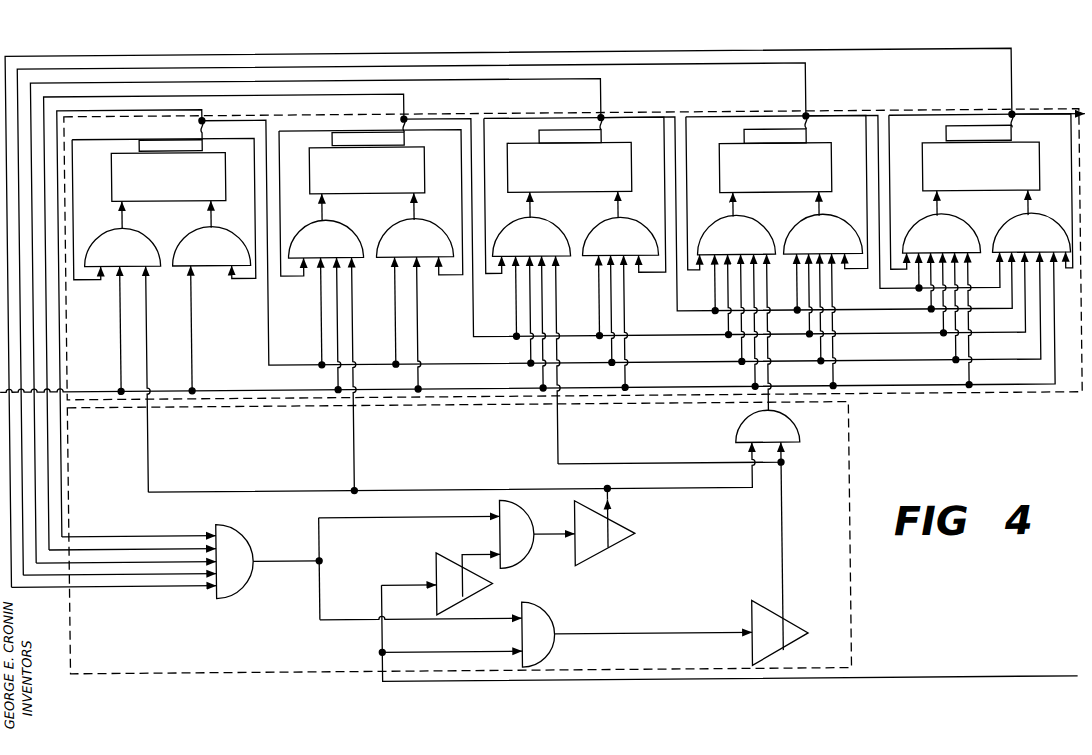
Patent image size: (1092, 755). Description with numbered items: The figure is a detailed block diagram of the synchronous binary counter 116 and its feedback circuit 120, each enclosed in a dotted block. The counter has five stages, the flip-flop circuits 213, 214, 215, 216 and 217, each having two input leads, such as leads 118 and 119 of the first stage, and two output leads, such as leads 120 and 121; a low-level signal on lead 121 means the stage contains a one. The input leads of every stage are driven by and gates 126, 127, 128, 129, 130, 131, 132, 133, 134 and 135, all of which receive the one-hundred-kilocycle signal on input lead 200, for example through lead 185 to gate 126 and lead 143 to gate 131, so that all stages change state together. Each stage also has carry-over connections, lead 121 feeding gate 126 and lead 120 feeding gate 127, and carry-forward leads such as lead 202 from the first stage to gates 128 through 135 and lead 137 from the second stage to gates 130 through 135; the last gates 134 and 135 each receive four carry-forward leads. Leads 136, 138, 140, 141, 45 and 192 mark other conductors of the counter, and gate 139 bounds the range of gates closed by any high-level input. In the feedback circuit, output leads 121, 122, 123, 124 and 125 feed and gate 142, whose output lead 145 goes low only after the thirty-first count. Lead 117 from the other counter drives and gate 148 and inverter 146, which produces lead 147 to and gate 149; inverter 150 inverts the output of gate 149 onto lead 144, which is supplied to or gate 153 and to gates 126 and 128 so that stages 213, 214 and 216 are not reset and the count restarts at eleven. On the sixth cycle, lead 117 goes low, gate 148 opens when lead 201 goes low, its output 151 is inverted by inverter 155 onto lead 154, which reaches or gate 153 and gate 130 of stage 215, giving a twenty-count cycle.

The conductor 45 is at (630, 112).
The counter 116 is at (952, 397).
The lead 117 is at (976, 680).
The input lead 118 is at (123, 210).
The input lead 119 is at (214, 210).
The feedback circuit 120 is at (851, 568).
The output lead 121 is at (84, 533).
The output lead 122 is at (107, 546).
The output lead 123 is at (160, 559).
The output lead 124 is at (810, 137).
The output lead 125 is at (1016, 138).
The and gate 126 is at (102, 240).
The and gate 127 is at (240, 237).
The and gate 128 is at (306, 234).
The and gate 129 is at (436, 232).
The and gate 130 is at (511, 234).
The and gate 131 is at (648, 230).
The and gate 132 is at (709, 231).
The and gate 133 is at (849, 229).
The and gate 134 is at (918, 230).
The and gate 135 is at (1056, 230).
The conductor 136 is at (322, 112).
The carry-forward lead 137 is at (437, 112).
The conductor 138 is at (528, 112).
The and gate 139 is at (541, 137).
The conductor 140 is at (1015, 78).
The conductor 141 is at (835, 112).
The and gate 142 is at (147, 325).
The lead 143 is at (627, 381).
The lead 144 is at (430, 489).
The output lead 145 is at (290, 558).
The inverter 146 is at (492, 584).
The lead 147 is at (470, 558).
The and gate 148 is at (552, 626).
The and gate 149 is at (529, 524).
The inverter 150 is at (614, 522).
The output lead 151 is at (624, 634).
The or gate 153 is at (799, 440).
The lead 154 is at (782, 521).
The inverter 155 is at (801, 623).
The lead 185 is at (120, 325).
The conductor 192 is at (192, 330).
The input lead 200 is at (92, 388).
The input lead 201 is at (474, 618).
The carry-forward lead 202 is at (270, 346).
The flip-flop circuit 213 is at (175, 198).
The flip-flop circuit 214 is at (378, 192).
The flip-flop circuit 215 is at (586, 192).
The flip-flop circuit 216 is at (792, 194).
The flip-flop circuit 217 is at (1002, 194).